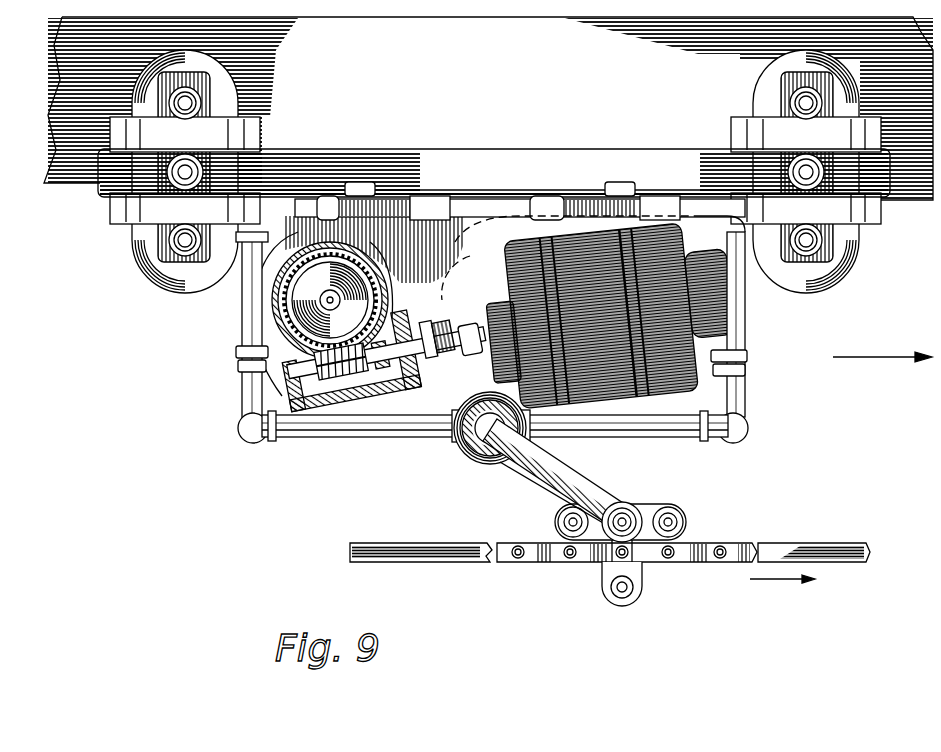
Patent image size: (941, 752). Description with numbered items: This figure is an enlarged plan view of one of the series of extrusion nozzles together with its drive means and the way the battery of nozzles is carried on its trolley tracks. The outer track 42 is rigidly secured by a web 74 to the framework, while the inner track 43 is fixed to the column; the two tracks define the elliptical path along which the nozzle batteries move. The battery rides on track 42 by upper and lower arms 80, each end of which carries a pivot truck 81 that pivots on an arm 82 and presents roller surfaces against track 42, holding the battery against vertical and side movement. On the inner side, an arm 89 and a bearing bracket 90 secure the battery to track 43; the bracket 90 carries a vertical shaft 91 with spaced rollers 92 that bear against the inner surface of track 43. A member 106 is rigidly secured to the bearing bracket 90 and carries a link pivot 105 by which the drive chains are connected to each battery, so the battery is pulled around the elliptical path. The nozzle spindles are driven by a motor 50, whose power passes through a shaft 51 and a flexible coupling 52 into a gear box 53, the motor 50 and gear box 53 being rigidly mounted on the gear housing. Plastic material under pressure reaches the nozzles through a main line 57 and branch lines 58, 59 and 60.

The web 74 is at (475, 44).
The trolley track 42 is at (70, 184).
The pivot truck 81 is at (170, 128).
The arm 82 is at (195, 168).
The upper and lower arms 80 is at (440, 162).
The branch line 60 is at (300, 215).
The motor 50 is at (565, 272).
The shaft 51 is at (470, 332).
The flexible coupling 52 is at (440, 322).
The gear box 53 is at (365, 392).
The branch line 59 is at (242, 322).
The branch line 58 is at (312, 432).
The main line 57 is at (460, 442).
The arm 89 is at (520, 486).
The bearing bracket 90 is at (645, 508).
The vertical shaft 91 is at (690, 526).
The roller 92 is at (690, 512).
The trolley track 43 is at (412, 545).
The link pivot 105 is at (642, 580).
The member 106 is at (606, 542).